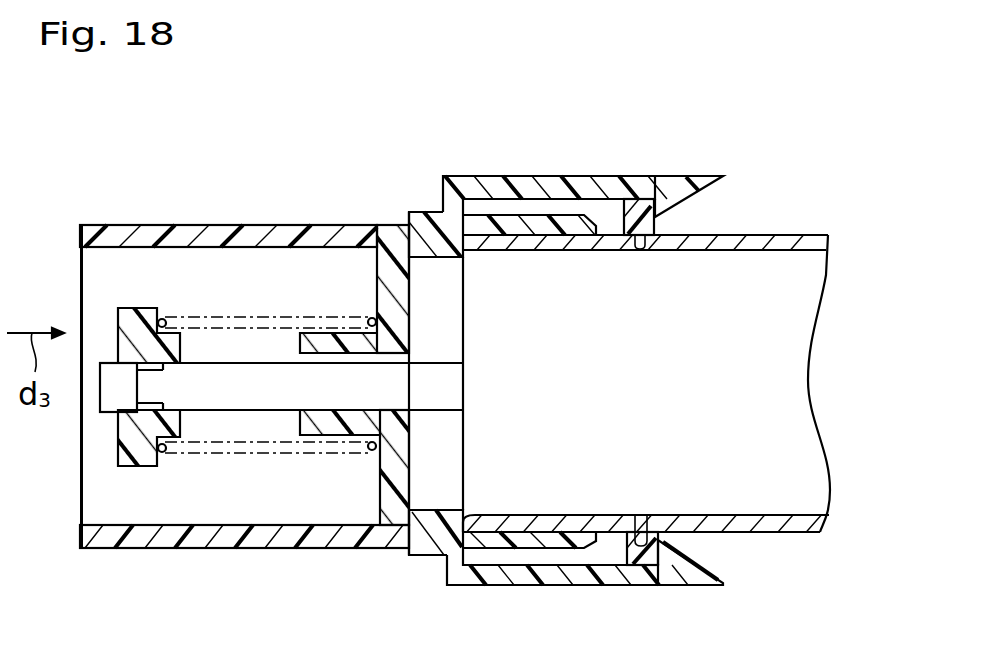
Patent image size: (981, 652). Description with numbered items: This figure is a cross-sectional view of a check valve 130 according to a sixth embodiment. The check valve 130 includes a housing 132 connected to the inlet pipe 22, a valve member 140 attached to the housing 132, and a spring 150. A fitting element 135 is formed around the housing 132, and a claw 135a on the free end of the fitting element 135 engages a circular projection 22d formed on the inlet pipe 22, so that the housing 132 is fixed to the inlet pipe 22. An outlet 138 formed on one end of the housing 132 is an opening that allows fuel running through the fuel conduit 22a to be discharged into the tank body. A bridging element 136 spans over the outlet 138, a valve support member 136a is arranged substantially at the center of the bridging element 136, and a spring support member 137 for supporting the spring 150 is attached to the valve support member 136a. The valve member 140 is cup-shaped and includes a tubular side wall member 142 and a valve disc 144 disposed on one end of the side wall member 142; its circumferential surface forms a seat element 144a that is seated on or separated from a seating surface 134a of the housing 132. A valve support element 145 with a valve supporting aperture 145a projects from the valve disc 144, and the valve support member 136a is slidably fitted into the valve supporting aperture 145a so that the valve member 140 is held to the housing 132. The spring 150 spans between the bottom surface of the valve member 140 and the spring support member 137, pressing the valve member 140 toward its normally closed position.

The check valve 130 is at (397, 161).
The housing 132 is at (532, 222).
The seating surface 134a is at (403, 247).
The fitting element 135 is at (579, 185).
The claw 135a is at (724, 176).
The bridging element 136 is at (433, 372).
The valve support member 136a is at (222, 393).
The spring support member 137 is at (132, 455).
The outlet 138 is at (445, 490).
The valve member 140 is at (241, 226).
The tubular side wall member 142 is at (197, 317).
The valve disc 144 is at (397, 288).
The seat element 144a is at (410, 280).
The valve support element 145 is at (338, 423).
The valve supporting aperture 145a is at (315, 440).
The spring 150 is at (133, 228).
The inlet pipe 22 is at (757, 240).
The fuel conduit 22a is at (747, 249).
The circular projection 22d is at (652, 196).